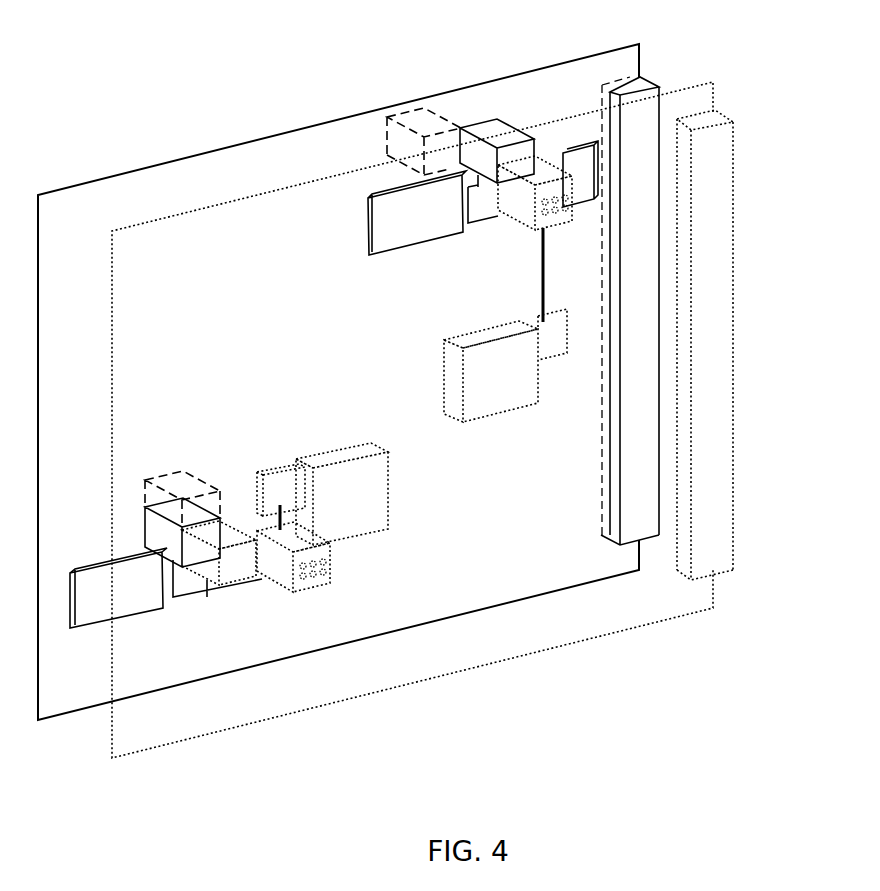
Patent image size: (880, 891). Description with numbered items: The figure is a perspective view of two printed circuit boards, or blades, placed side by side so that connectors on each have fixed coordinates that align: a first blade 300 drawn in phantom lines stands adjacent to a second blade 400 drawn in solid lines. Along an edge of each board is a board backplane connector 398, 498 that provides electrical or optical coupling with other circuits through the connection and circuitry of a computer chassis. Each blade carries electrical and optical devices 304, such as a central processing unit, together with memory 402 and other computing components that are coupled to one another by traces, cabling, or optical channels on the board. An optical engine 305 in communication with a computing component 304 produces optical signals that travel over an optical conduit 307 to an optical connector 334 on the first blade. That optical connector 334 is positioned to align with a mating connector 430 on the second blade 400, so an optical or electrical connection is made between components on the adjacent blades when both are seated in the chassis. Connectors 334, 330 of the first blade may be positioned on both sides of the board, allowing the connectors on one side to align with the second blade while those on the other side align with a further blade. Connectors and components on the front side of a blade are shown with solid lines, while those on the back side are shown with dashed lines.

The printed circuit board 300 is at (712, 82).
The electrical and optical devices 304 is at (445, 340).
The optical engine 305 is at (566, 355).
The optical conduit 307 is at (542, 267).
The connector 330 is at (569, 221).
The optical connector 334 is at (552, 146).
The board backplane connector 398 is at (733, 121).
The printed circuit board 400 is at (633, 44).
The memory 402 is at (368, 197).
The mating connector 430 is at (498, 120).
The board backplane connector 498 is at (658, 90).